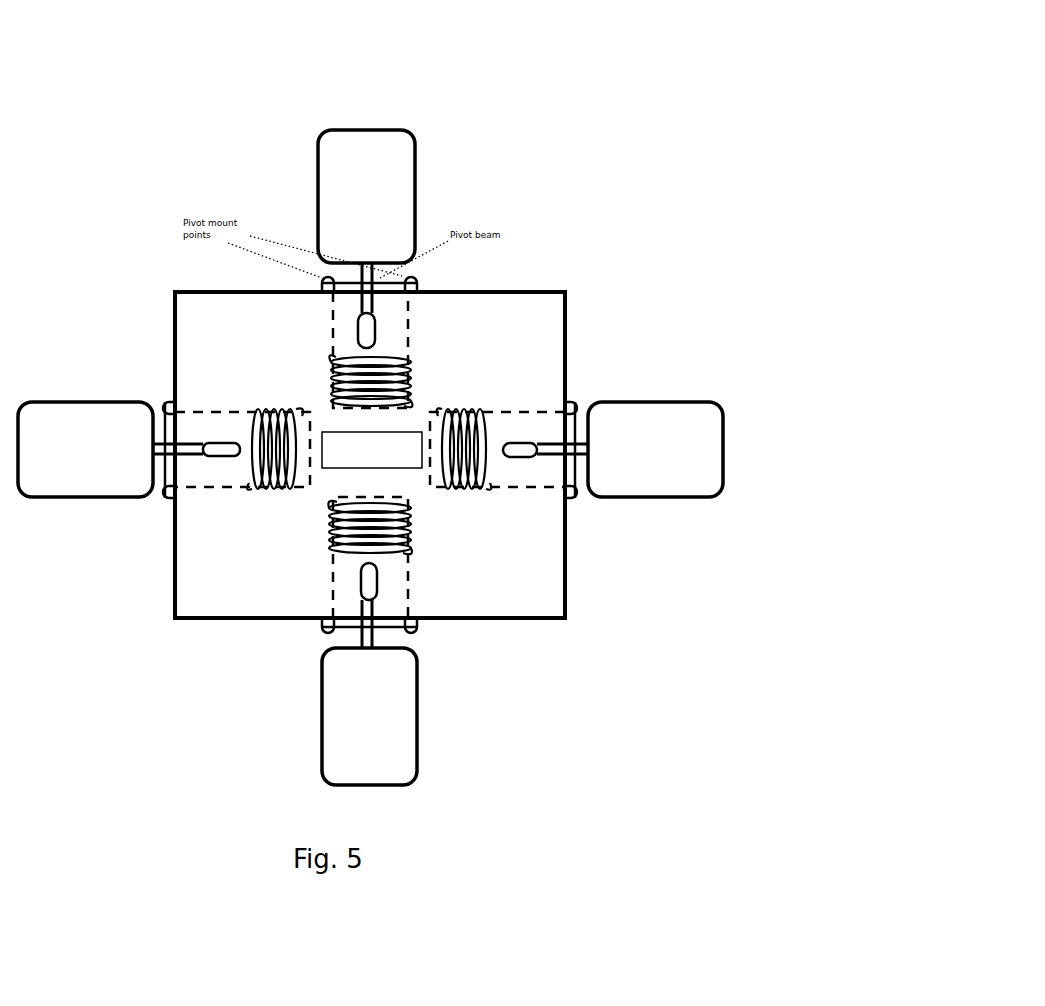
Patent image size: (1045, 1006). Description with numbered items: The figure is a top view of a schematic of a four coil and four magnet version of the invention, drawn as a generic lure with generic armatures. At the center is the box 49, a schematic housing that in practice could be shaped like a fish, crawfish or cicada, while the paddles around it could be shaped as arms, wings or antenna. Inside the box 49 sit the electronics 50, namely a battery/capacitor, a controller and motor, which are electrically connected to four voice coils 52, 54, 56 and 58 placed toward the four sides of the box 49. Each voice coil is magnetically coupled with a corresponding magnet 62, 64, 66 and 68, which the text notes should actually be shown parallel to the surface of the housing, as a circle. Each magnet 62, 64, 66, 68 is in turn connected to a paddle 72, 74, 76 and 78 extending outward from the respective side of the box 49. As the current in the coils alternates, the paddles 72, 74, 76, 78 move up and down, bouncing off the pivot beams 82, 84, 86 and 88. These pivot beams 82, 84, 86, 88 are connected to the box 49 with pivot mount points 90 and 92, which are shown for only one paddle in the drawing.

The box 49 is at (543, 588).
The electronics 50 is at (385, 433).
The voice coil 52 is at (263, 485).
The voice coil 54 is at (402, 548).
The voice coil 56 is at (478, 425).
The voice coil 58 is at (362, 370).
The magnet 62 is at (208, 458).
The magnet 64 is at (372, 588).
The magnet 66 is at (533, 458).
The magnet 68 is at (357, 318).
The paddle 72 is at (78, 440).
The paddle 74 is at (347, 742).
The paddle 76 is at (695, 452).
The paddle 78 is at (373, 150).
The pivot beam 82 is at (158, 400).
The pivot beam 84 is at (327, 645).
The pivot beam 86 is at (583, 420).
The pivot beam 88 is at (400, 280).
The pivot mount point 90 is at (167, 400).
The pivot mount point 92 is at (155, 495).